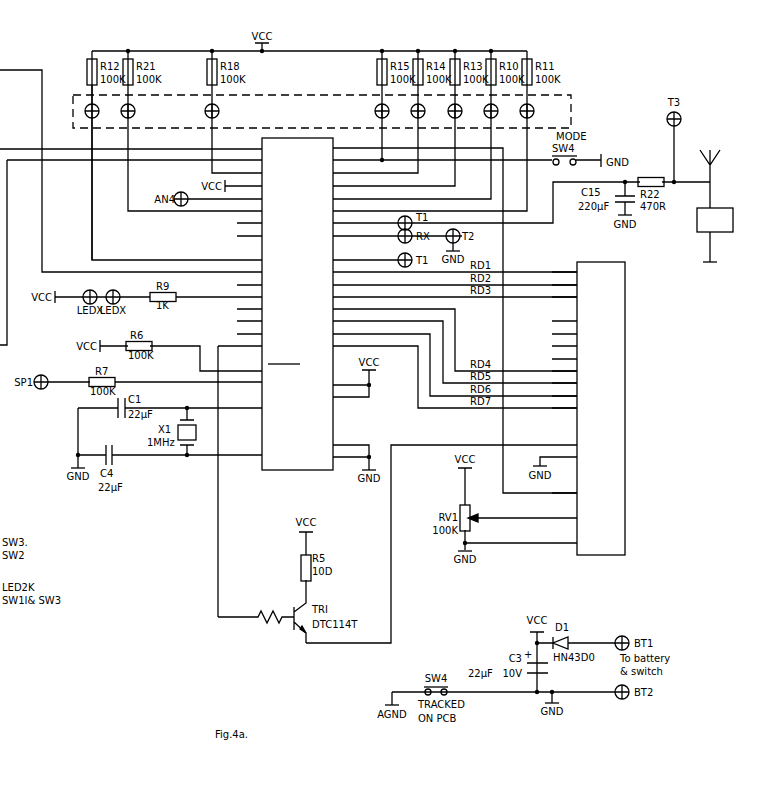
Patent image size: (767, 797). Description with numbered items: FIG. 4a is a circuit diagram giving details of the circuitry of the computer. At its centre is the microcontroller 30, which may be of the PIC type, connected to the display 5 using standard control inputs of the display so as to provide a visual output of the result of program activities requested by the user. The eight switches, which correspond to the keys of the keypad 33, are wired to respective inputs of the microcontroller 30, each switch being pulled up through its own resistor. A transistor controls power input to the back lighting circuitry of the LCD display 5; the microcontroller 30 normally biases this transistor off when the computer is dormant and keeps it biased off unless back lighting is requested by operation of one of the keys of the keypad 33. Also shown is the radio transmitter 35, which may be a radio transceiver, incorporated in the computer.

The keypad 33 is at (73, 95).
The microcontroller 30 is at (310, 138).
The radio transmitter 35 is at (697, 225).
The display 5 is at (625, 395).